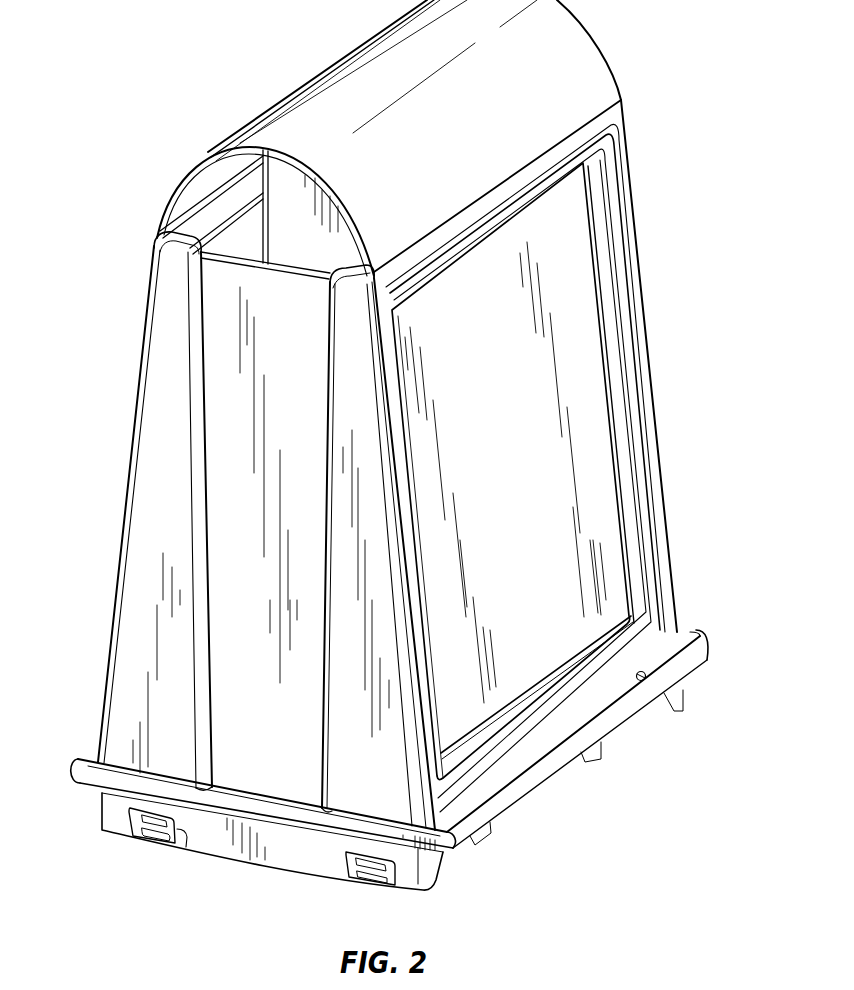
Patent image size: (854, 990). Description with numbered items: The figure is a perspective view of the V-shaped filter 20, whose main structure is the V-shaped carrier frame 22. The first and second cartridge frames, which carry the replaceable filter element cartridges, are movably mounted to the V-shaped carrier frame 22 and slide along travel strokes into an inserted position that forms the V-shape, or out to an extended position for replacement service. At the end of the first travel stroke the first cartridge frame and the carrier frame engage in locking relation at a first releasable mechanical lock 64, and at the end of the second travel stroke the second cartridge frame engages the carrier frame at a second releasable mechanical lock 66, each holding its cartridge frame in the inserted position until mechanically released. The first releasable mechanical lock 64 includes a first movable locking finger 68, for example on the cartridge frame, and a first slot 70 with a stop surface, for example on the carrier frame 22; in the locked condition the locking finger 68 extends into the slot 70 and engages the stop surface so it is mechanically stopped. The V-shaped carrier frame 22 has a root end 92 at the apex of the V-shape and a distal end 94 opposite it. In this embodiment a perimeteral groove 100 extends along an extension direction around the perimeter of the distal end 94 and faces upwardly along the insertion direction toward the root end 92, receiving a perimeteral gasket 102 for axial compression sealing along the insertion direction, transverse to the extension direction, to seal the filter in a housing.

The V-shaped filter 20 is at (152, 129).
The V-shaped carrier frame 22 is at (147, 309).
The first releasable mechanical lock 64 is at (144, 861).
The second releasable mechanical lock 66 is at (343, 892).
The first movable locking finger 68 is at (140, 840).
The first slot 70 is at (182, 838).
The root end 92 is at (641, 74).
The distal end 94 is at (722, 611).
The perimeteral groove 100 is at (93, 752).
The perimeteral gasket 102 is at (637, 681).